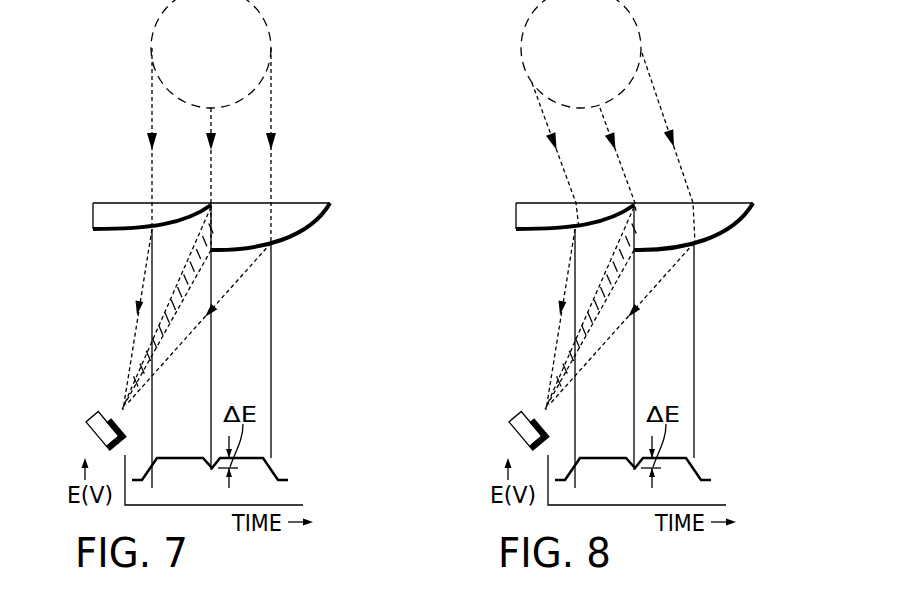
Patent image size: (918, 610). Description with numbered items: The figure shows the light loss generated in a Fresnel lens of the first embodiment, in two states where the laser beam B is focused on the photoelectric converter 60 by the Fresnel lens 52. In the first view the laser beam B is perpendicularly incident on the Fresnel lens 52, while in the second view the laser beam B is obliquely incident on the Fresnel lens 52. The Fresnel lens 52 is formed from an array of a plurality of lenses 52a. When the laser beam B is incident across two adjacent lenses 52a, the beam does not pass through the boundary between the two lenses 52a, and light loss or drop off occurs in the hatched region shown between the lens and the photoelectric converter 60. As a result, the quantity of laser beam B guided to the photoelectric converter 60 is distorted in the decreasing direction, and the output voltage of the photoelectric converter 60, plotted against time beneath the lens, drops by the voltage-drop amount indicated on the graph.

In FIG. 7, the laser beam B is at (258, 10).
In FIG. 8, the laser beam B is at (627, 11).
In FIG. 7, the Fresnel lens 52 is at (321, 177).
In FIG. 8, the Fresnel lens 52 is at (648, 191).
In FIG. 7, the lenses 52a is at (115, 224).
In FIG. 8, the lenses 52a is at (634, 243).
In FIG. 7, the photoelectric converter 60 is at (91, 420).
In FIG. 8, the photoelectric converter 60 is at (518, 415).